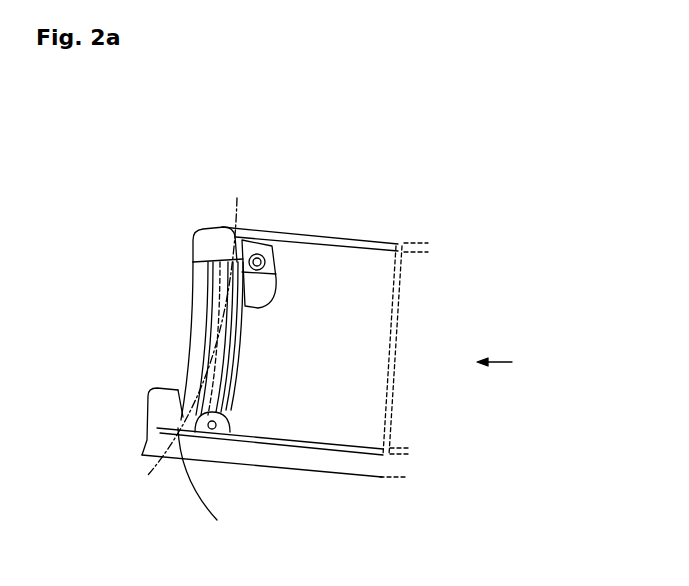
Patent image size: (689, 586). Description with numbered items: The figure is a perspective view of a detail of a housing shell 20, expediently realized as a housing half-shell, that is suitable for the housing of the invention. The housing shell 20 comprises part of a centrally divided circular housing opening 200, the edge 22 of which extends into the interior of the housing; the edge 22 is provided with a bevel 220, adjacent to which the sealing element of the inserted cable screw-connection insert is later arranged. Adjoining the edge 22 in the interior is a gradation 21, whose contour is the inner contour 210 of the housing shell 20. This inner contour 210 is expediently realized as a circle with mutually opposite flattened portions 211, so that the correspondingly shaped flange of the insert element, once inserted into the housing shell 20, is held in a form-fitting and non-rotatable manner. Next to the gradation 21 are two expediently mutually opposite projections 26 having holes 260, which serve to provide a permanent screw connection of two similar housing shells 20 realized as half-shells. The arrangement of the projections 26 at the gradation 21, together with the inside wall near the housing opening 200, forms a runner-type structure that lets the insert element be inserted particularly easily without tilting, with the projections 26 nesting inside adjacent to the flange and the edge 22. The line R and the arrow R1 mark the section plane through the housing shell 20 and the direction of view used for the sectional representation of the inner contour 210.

The housing shell 20 is at (188, 132).
The housing opening 200 is at (132, 270).
The flattened portions 211 is at (225, 280).
The edge 22 is at (193, 332).
The bevel 220 is at (193, 352).
The inner contour 210 is at (240, 352).
The gradation 21 is at (232, 393).
The projections 26 is at (257, 285).
The holes 260 is at (267, 227).
The line R- R is at (193, 332).
The arrow R1 is at (515, 364).